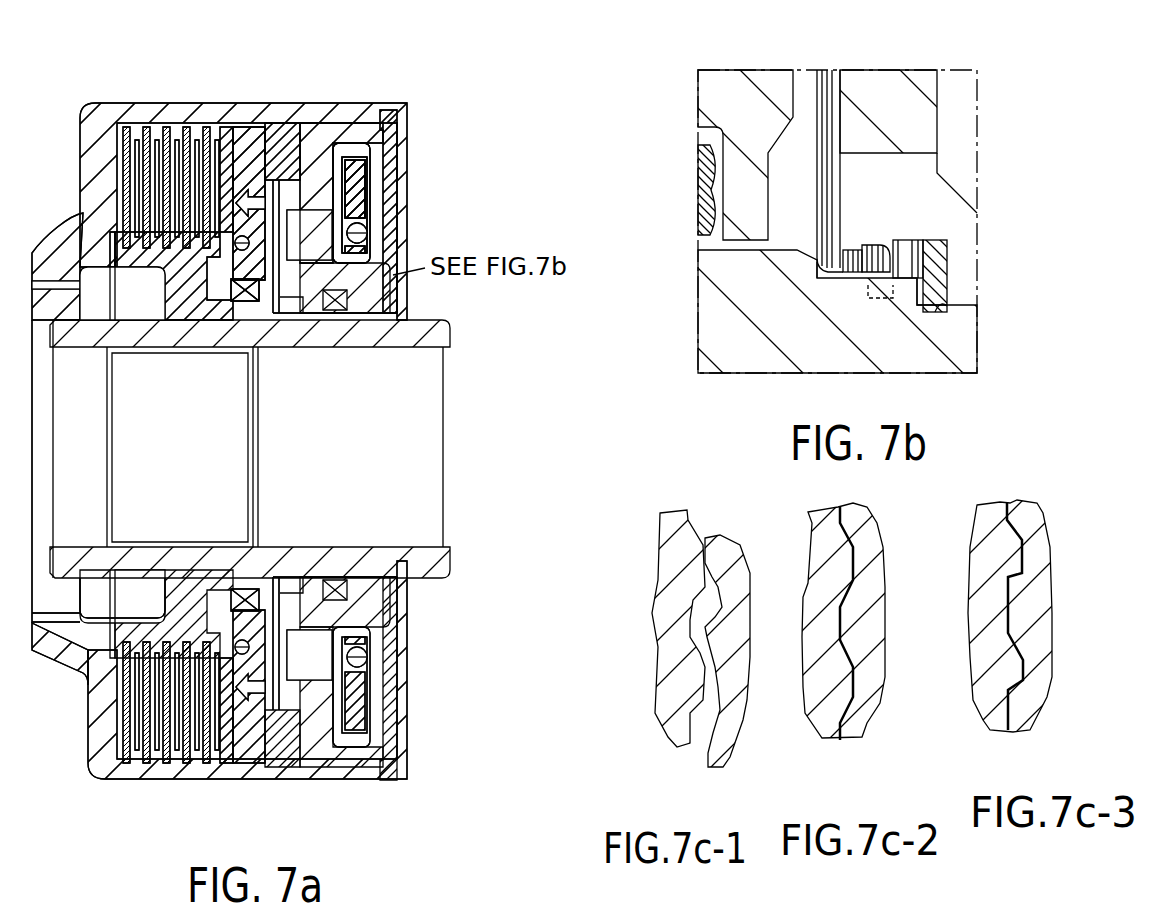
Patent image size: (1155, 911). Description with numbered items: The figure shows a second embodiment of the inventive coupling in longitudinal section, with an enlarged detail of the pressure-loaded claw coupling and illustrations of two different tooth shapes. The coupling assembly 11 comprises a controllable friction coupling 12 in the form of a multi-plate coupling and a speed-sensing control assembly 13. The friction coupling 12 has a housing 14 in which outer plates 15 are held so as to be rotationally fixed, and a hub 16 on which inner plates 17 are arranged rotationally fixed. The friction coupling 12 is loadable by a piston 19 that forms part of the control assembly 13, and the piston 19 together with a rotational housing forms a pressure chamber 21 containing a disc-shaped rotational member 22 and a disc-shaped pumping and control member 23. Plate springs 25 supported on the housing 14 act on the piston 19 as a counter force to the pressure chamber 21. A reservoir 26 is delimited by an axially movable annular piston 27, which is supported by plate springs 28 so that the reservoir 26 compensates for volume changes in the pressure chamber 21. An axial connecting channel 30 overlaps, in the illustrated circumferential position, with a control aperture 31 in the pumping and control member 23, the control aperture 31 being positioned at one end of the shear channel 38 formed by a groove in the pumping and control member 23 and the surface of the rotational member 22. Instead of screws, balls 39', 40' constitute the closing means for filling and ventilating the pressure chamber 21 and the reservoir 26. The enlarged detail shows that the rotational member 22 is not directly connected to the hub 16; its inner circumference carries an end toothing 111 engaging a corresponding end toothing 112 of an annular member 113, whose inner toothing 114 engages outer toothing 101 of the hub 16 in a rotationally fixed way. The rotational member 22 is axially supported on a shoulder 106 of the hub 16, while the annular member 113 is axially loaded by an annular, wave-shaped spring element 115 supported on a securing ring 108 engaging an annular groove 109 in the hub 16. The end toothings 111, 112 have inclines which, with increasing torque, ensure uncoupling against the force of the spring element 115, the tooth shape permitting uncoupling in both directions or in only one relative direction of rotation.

In FIG. 7a, the coupling assembly 11 is at (105, 790).
In FIG. 7a, the controllable friction coupling 12 is at (180, 790).
In FIG. 7a, the speed-sensing control assembly 13 is at (280, 790).
In FIG. 7a, the housing 14 is at (100, 125).
In FIG. 7a, the outer plates 15 is at (127, 127).
In FIG. 7a, the hub 16 is at (66, 300).
In FIG. 7b, the hub 16 is at (713, 320).
In FIG. 7a, the inner plates 17 is at (117, 217).
In FIG. 7a, the piston 19 is at (258, 120).
In FIG. 7a, the pressure chamber 21 is at (262, 125).
In FIG. 7a, the rotational member 22 is at (279, 182).
In FIG. 7b, the rotational member 22 is at (823, 87).
In FIG. 7a, the pumping and control member 23 is at (293, 215).
In FIG. 7a, the plate springs 25 is at (240, 140).
In FIG. 7a, the reservoir 26 is at (320, 225).
In FIG. 7a, the annular piston 27 is at (357, 158).
In FIG. 7a, the plate springs 28 is at (387, 120).
In FIG. 7a, the axial connecting channel 30 is at (320, 225).
In FIG. 7a, the control aperture 31 is at (327, 220).
In FIG. 7a, the shear channel 38 is at (300, 647).
In FIG. 7a, the ball 39' is at (367, 643).
In FIG. 7a, the ball 40' is at (398, 687).
In FIG. 7b, the outer toothing 101 is at (822, 290).
In FIG. 7b, the shoulder 106 is at (750, 340).
In FIG. 7b, the securing ring 108 is at (927, 262).
In FIG. 7b, the annular groove 109 is at (945, 305).
In FIG. 7b, the end toothing 111 is at (847, 272).
In FIG. 7c-1, the end toothing 111 is at (700, 715).
In FIG. 7c-2, the end toothing 111 is at (850, 713).
In FIG. 7c-3, the end toothing 111 is at (990, 727).
In FIG. 7b, the end toothing 112 is at (855, 272).
In FIG. 7c-1, the end toothing 112 is at (715, 757).
In FIG. 7c-2, the end toothing 112 is at (850, 715).
In FIG. 7c-3, the end toothing 112 is at (1017, 720).
In FIG. 7b, the annular member 113 is at (880, 293).
In FIG. 7b, the inner toothing 114 is at (907, 265).
In FIG. 7b, the spring element 115 is at (940, 300).